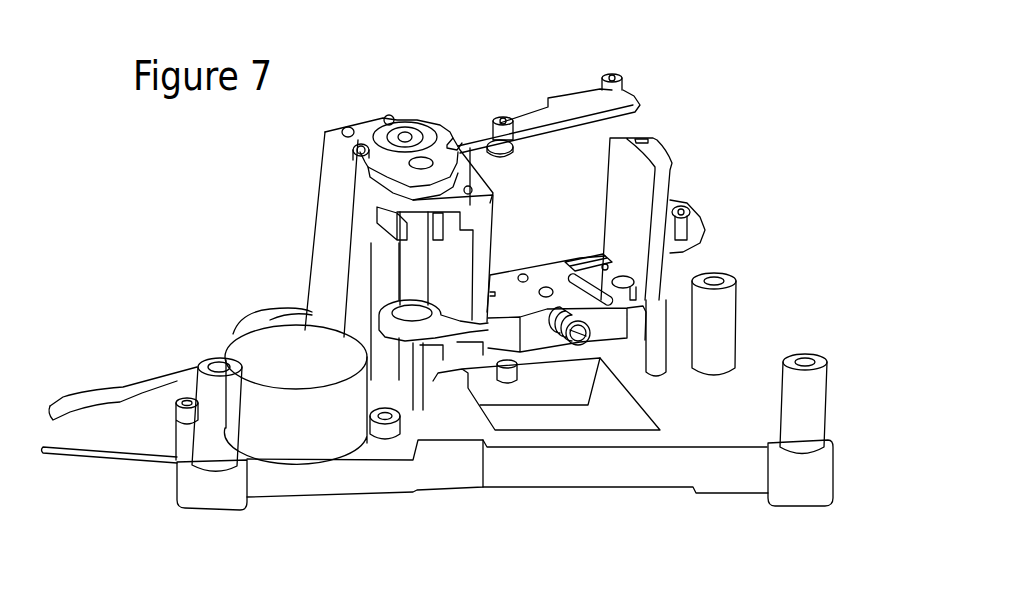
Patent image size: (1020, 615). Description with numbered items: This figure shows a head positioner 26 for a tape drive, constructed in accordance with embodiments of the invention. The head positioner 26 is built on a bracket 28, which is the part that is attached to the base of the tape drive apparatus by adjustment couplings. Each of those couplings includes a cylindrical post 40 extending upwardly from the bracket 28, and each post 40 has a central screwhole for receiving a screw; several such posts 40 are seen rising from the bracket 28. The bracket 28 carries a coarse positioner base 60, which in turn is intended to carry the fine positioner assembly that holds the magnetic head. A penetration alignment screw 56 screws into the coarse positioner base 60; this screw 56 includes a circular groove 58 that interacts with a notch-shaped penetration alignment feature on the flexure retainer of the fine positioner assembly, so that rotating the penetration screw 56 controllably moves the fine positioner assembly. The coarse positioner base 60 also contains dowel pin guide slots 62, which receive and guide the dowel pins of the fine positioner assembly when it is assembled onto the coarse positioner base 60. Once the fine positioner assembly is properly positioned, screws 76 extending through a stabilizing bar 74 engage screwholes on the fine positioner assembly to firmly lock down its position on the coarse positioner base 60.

The head positioner assembly 26 is at (423, 80).
The bracket 28 is at (282, 483).
The cylindrical post 40 is at (210, 388).
The penetration alignment screw 56 is at (582, 336).
The circular groove 58 is at (562, 308).
The coarse positioner base 60 is at (670, 183).
The dowel pin guide slots 62 is at (575, 262).
The stabilizing bar 74 is at (572, 97).
The screws 76 is at (503, 117).